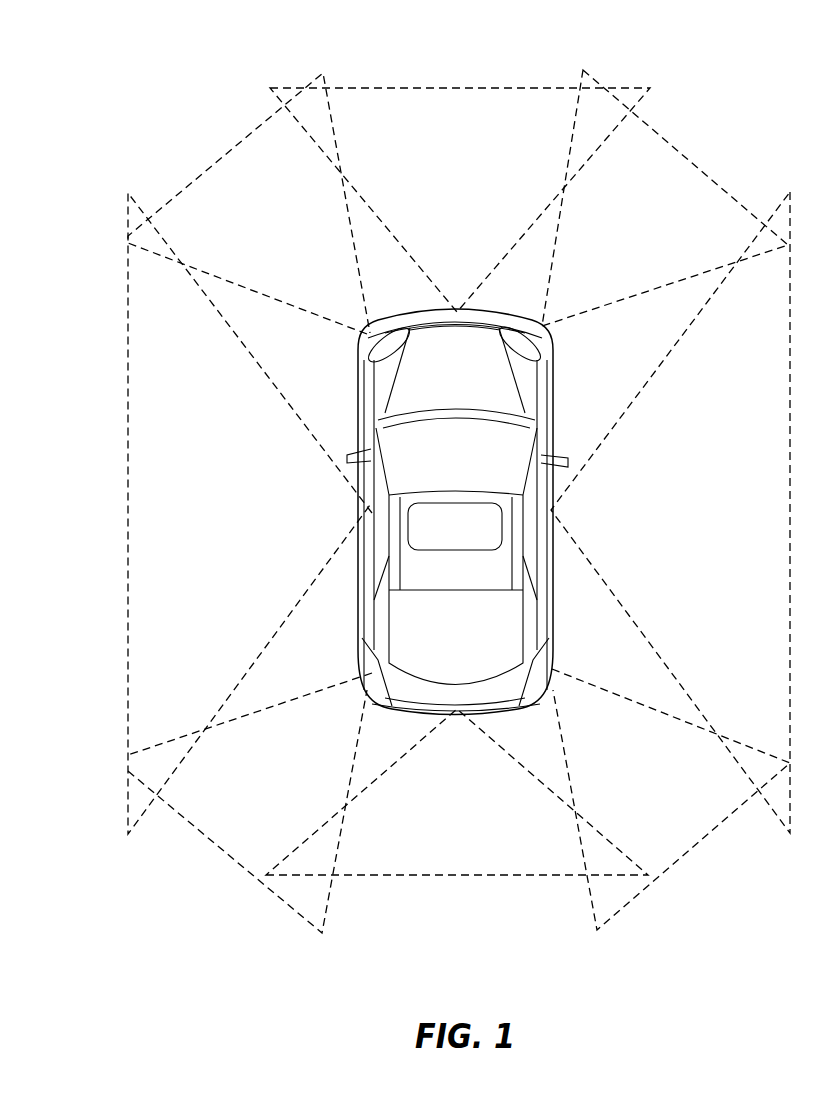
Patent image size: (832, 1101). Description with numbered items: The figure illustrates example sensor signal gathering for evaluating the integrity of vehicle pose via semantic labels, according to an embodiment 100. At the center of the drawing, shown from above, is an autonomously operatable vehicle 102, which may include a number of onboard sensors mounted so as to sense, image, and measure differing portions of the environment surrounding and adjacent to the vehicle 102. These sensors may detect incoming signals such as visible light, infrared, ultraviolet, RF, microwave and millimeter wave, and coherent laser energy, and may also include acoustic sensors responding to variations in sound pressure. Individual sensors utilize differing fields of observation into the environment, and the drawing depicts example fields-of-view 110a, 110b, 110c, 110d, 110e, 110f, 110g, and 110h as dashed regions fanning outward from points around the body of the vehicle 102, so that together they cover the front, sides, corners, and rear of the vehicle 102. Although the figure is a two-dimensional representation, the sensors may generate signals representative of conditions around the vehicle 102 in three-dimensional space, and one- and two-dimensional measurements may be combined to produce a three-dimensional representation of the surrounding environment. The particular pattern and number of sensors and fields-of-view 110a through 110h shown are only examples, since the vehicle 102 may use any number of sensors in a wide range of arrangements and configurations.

The embodiment 100 is at (126, 50).
The autonomously operatable vehicle 102 is at (562, 387).
The field-of-view 110a is at (460, 200).
The field-of-view 110b is at (665, 198).
The field-of-view 110c is at (670, 512).
The field-of-view 110d is at (671, 799).
The field-of-view 110e is at (457, 792).
The field-of-view 110f is at (250, 803).
The field-of-view 110g is at (250, 513).
The field-of-view 110h is at (249, 203).